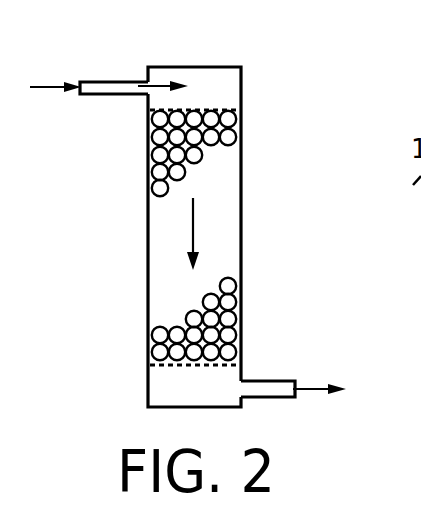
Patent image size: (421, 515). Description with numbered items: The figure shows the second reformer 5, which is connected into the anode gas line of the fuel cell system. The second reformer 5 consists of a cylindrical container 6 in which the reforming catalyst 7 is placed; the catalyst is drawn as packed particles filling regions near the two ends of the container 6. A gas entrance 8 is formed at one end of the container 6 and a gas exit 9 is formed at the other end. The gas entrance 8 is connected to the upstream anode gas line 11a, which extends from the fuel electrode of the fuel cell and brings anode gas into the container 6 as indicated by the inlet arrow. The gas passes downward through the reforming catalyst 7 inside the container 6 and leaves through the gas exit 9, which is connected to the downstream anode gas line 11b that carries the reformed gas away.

The second reformer 5 is at (224, 237).
The cylindrical container 6 is at (241, 232).
The reforming catalyst 7 is at (152, 198).
The gas entrance 8 is at (115, 96).
The gas exit 9 is at (270, 380).
The upstream anode gas line 11a is at (45, 82).
The downstream anode gas line 11b is at (307, 383).